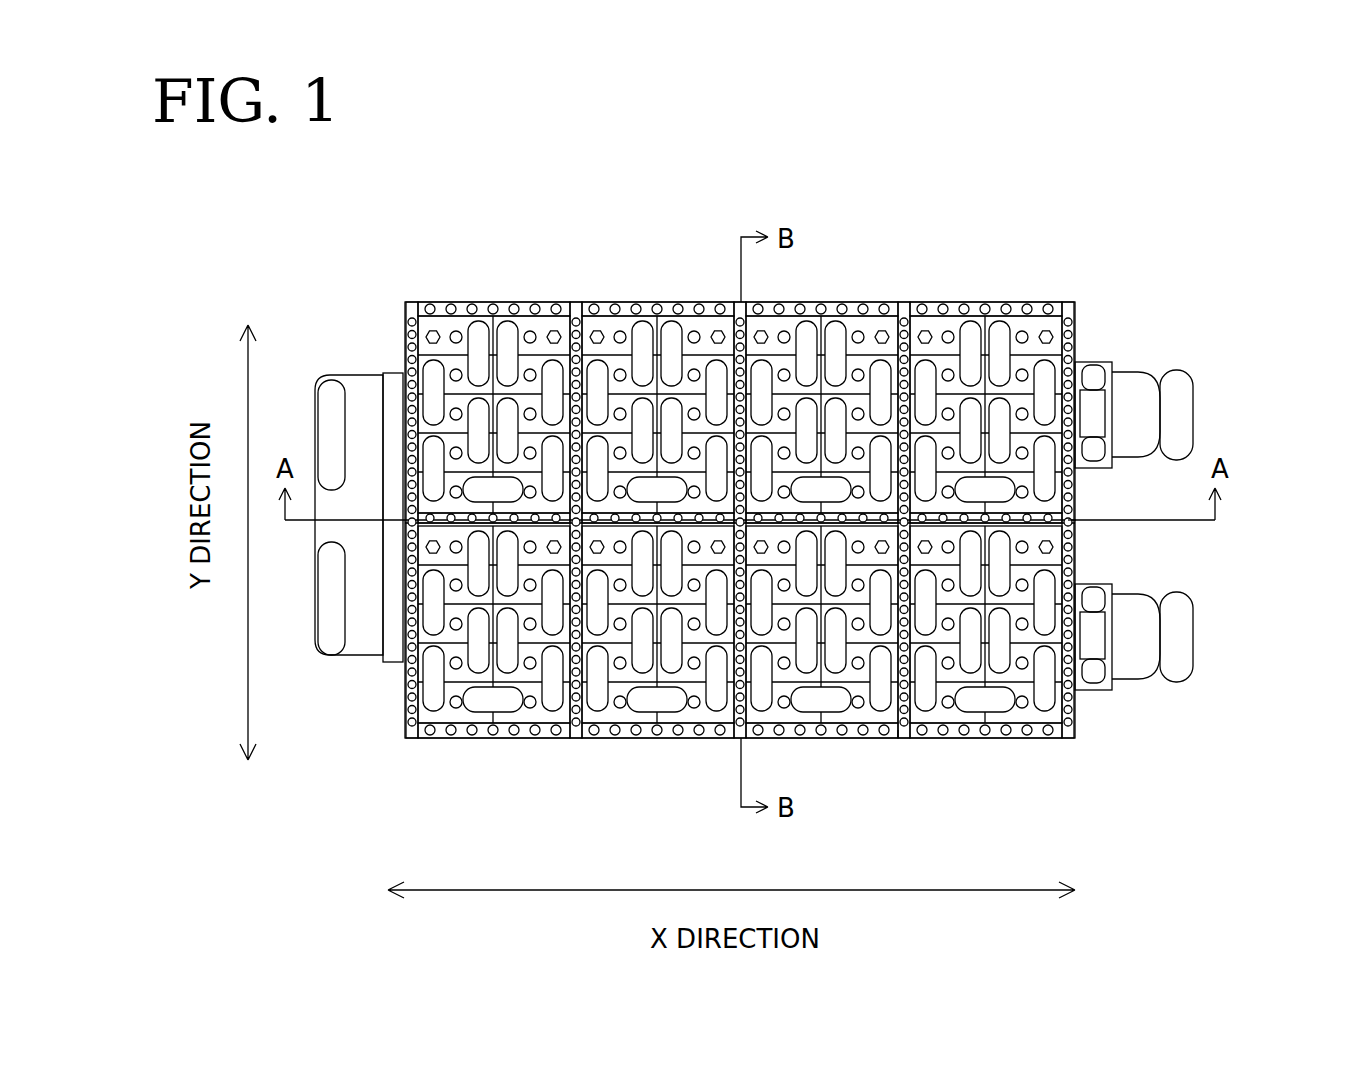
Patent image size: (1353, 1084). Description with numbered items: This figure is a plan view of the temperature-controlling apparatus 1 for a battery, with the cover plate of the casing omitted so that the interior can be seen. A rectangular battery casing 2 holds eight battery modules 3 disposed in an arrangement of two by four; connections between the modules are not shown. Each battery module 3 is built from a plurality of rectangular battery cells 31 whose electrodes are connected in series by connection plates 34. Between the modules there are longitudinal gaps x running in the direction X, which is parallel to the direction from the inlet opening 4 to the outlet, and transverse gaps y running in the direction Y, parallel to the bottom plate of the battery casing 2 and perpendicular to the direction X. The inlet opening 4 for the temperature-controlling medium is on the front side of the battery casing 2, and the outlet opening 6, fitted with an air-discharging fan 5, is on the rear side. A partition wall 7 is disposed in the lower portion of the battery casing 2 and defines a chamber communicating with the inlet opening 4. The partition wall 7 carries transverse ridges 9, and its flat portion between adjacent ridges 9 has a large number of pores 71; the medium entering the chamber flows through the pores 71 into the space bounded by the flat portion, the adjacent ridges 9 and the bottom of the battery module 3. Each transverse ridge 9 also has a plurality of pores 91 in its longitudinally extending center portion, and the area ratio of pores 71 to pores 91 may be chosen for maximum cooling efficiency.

The temperature-controlling apparatus 1 is at (523, 282).
The battery casing 2 is at (600, 302).
The battery module 3 is at (462, 724).
The battery cell 31 is at (533, 720).
The connection plate 34 is at (993, 724).
The inlet opening 4 is at (328, 652).
The air-discharging fan 5 is at (1097, 375).
The outlet opening 6 is at (1195, 432).
The partition wall 7 is at (858, 302).
The pores 71 is at (790, 300).
The transverse ridge 9 is at (904, 302).
The pores 91 is at (1076, 316).
The longitudinal gap x is at (1075, 530).
The transverse gap y is at (898, 738).